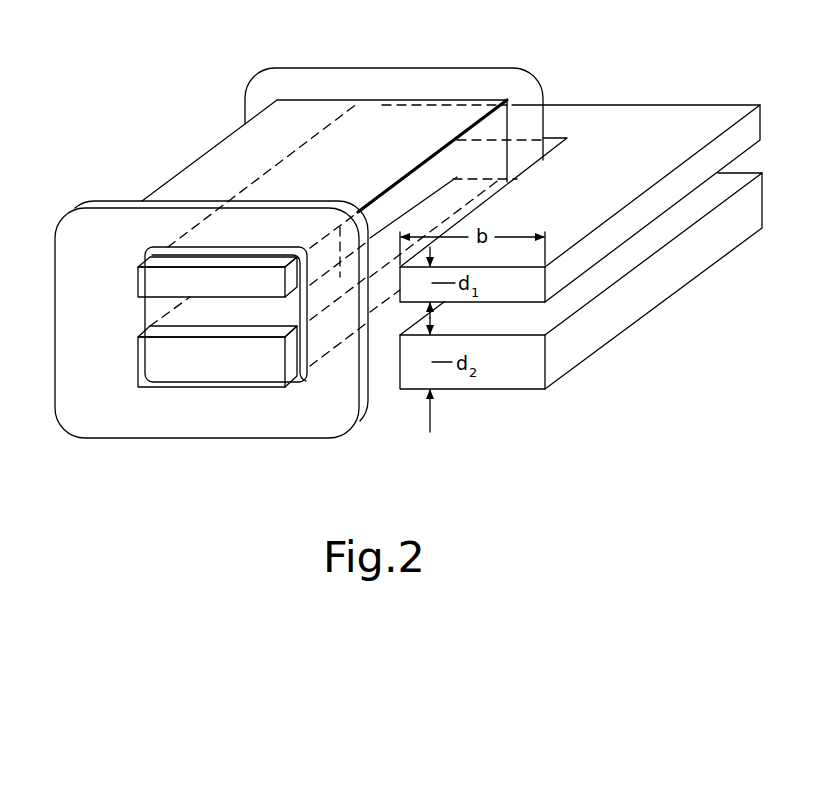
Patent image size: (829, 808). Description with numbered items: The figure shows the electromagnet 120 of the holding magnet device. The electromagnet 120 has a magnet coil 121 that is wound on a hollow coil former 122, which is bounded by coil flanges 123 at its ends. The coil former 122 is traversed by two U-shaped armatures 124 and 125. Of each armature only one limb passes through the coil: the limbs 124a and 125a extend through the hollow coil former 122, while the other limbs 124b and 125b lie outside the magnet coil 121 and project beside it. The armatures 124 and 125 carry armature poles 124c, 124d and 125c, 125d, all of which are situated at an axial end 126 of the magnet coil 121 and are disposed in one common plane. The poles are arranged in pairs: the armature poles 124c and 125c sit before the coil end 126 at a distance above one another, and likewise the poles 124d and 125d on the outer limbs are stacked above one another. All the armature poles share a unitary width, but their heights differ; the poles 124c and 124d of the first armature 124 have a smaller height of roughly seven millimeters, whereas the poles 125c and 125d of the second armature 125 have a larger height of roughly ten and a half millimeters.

The electromagnet 120 is at (200, 133).
The magnet coil 121 is at (192, 175).
The coil former 122 is at (153, 315).
The coil flanges 123 is at (282, 78).
The U-shaped armature 124 is at (325, 208).
The limb 124a is at (158, 262).
The limb 124b is at (607, 235).
The armature pole 124c is at (152, 277).
The armature pole 124d is at (532, 287).
The U-shaped armature 125 is at (350, 208).
The limb 125a is at (273, 317).
The limb 125b is at (585, 342).
The armature pole 125c is at (155, 363).
The armature pole 125d is at (523, 373).
The axial end 126 is at (85, 420).